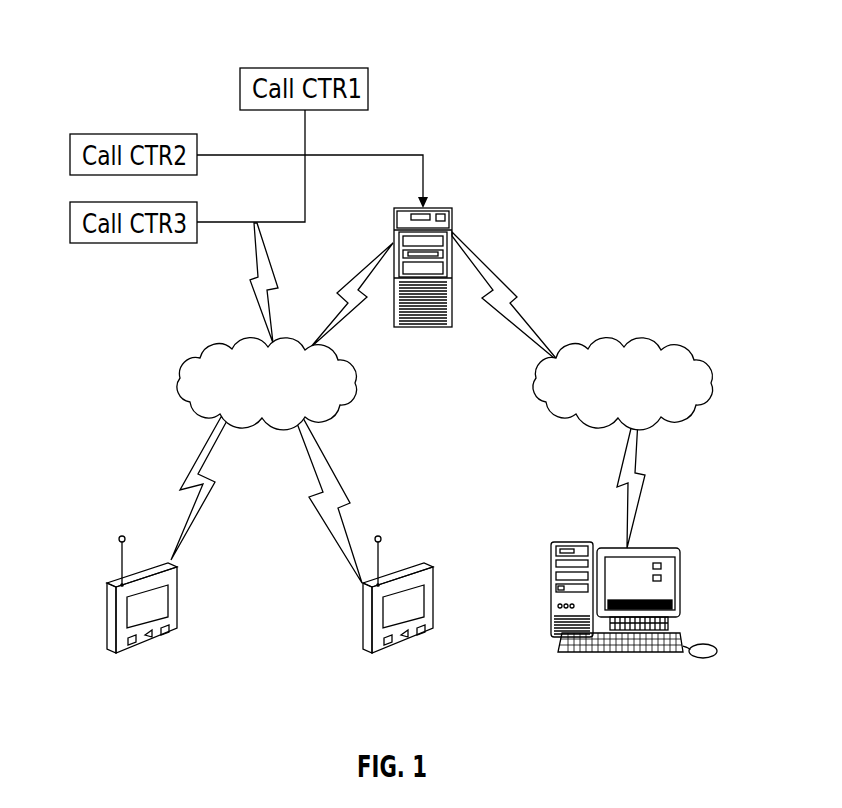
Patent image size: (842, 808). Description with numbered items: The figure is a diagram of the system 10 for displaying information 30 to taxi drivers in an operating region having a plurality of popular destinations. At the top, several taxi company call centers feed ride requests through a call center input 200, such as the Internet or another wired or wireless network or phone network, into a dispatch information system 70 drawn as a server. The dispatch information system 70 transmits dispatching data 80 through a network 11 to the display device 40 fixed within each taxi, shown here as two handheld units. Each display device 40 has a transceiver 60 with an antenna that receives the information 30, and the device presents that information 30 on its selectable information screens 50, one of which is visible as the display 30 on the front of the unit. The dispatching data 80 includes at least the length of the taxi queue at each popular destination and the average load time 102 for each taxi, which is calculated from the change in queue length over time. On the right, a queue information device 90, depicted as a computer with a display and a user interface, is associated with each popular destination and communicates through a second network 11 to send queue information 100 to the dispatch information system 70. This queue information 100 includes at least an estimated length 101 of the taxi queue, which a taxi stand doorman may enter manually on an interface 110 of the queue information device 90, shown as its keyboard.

The system 10 is at (114, 42).
The network 11 is at (228, 350).
The call center input 200 is at (364, 153).
The dispatch information system 70 is at (425, 328).
The dispatching data 80 is at (355, 315).
The display device 40 is at (135, 593).
The selectable information screens 50 is at (173, 566).
The information 30 is at (155, 604).
The transceiver 60 is at (107, 600).
The queue information device 90 is at (649, 601).
The queue information 100 is at (676, 548).
The estimated length of the taxi queue 101 is at (672, 570).
The average load time 102 is at (668, 588).
The interface 110 is at (600, 652).